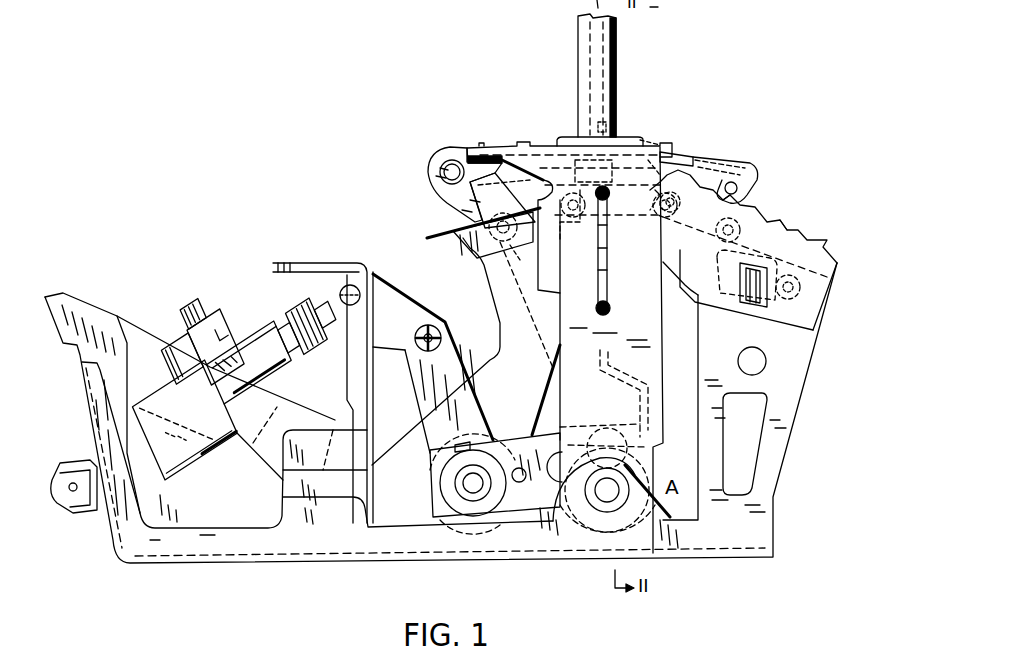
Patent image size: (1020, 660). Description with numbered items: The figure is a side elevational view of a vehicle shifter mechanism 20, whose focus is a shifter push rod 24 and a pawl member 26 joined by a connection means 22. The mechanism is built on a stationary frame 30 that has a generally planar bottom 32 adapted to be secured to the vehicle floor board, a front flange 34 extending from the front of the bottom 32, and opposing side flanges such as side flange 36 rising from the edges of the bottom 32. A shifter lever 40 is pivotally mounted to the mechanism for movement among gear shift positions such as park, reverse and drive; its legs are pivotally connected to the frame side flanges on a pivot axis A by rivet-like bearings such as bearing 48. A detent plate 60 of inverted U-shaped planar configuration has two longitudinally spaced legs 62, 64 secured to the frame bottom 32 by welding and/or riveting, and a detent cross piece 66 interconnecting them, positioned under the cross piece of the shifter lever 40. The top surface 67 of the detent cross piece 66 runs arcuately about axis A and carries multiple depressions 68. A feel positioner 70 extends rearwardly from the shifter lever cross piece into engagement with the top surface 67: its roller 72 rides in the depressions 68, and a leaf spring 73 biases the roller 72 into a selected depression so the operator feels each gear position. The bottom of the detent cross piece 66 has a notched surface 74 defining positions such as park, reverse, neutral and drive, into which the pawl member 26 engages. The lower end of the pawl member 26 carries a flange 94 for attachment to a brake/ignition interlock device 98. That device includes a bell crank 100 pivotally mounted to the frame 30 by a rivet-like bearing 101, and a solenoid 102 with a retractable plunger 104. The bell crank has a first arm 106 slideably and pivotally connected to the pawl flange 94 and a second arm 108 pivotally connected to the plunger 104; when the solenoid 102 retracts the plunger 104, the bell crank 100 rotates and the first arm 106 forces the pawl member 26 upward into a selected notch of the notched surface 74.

The shifter mechanism 20 is at (279, 155).
The connection means 22 is at (612, 127).
The shifter push rod 24 is at (622, 92).
The pawl member 26 is at (600, 293).
The stationary frame 30 is at (312, 571).
The bottom 32 is at (264, 565).
The front flange 34 is at (100, 517).
The side flange 36 is at (540, 550).
The shifter lever 40 is at (575, 75).
The rivet-like bearing 48 is at (604, 547).
The detent plate 60 is at (486, 298).
The leg 62 is at (534, 345).
The leg 64 is at (745, 422).
The detent cross piece 66 is at (520, 175).
The top surface 67 is at (786, 217).
The depressions 68 is at (800, 232).
The feel positioner 70 is at (756, 174).
The roller 72 is at (747, 198).
The leaf spring 73 is at (677, 152).
The notched surface 74 is at (740, 290).
The flange 94 is at (602, 429).
The brake/ignition interlock device 98 is at (211, 305).
The bell crank 100 is at (412, 412).
The rivet-like bearing 101 is at (462, 490).
The solenoid 102 is at (185, 476).
The plunger 104 is at (293, 322).
The first arm 106 is at (451, 363).
The second arm 108 is at (392, 352).